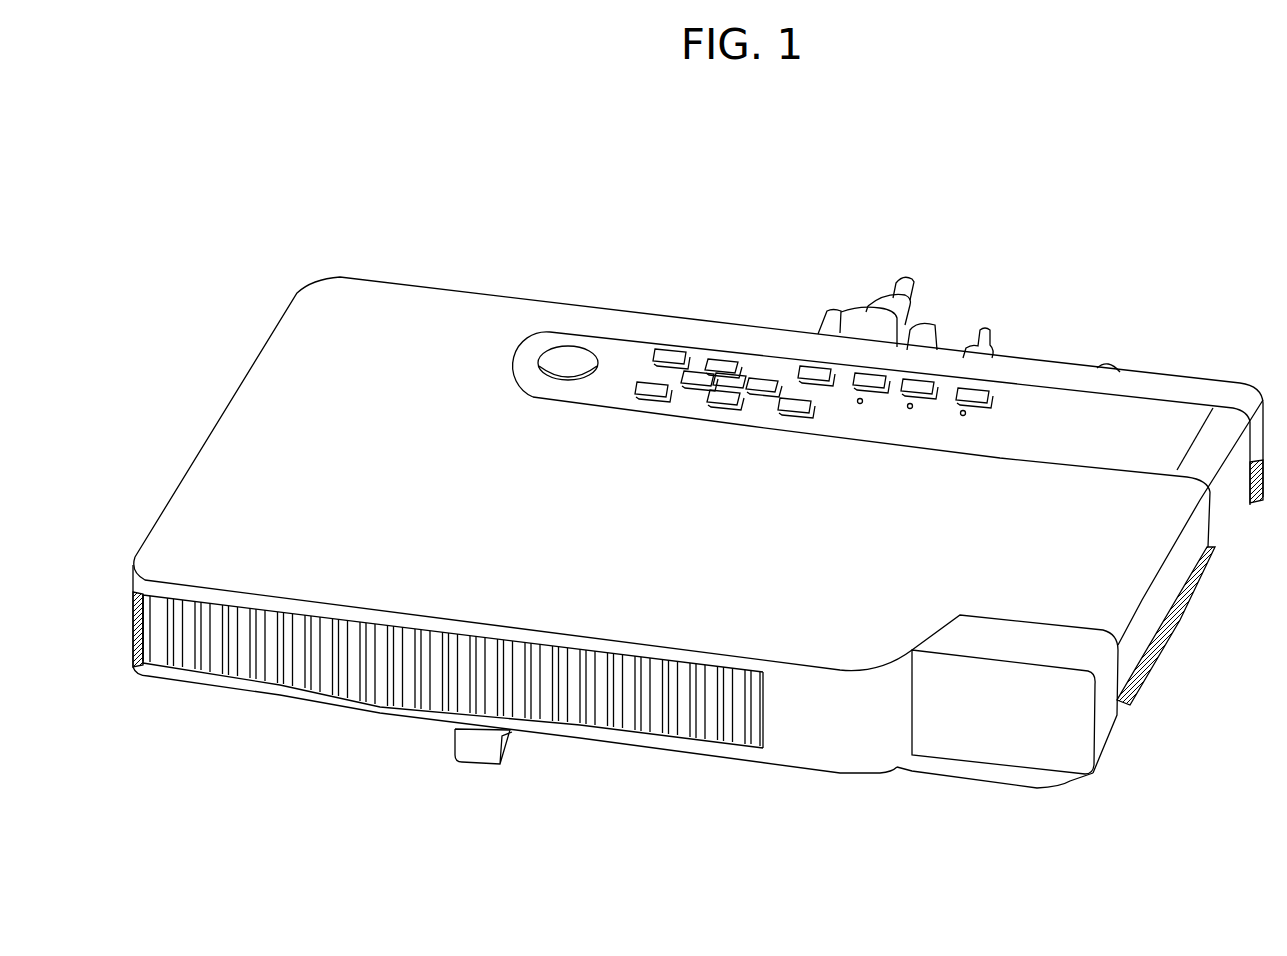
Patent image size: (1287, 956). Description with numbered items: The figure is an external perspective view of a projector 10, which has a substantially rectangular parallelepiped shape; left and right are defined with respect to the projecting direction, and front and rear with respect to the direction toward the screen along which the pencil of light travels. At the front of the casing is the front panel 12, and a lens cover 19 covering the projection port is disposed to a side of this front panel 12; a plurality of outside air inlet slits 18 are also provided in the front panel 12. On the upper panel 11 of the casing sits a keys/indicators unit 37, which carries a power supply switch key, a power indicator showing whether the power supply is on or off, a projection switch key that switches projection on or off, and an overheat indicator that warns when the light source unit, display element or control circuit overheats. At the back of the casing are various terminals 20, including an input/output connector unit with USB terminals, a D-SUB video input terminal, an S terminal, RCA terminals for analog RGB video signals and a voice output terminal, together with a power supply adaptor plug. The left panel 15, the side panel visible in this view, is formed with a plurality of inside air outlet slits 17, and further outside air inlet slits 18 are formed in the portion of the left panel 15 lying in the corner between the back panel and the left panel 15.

The projector 10 is at (665, 240).
The upper panel 11 is at (477, 308).
The front panel 12 is at (807, 735).
The left panel 15 is at (1168, 585).
The inside air outlet slits 17 is at (1160, 665).
The outside air inlet slits 18 is at (1257, 505).
The lens cover 19 is at (1042, 745).
The terminals 20 is at (943, 282).
The keys/indicators unit 37 is at (750, 312).